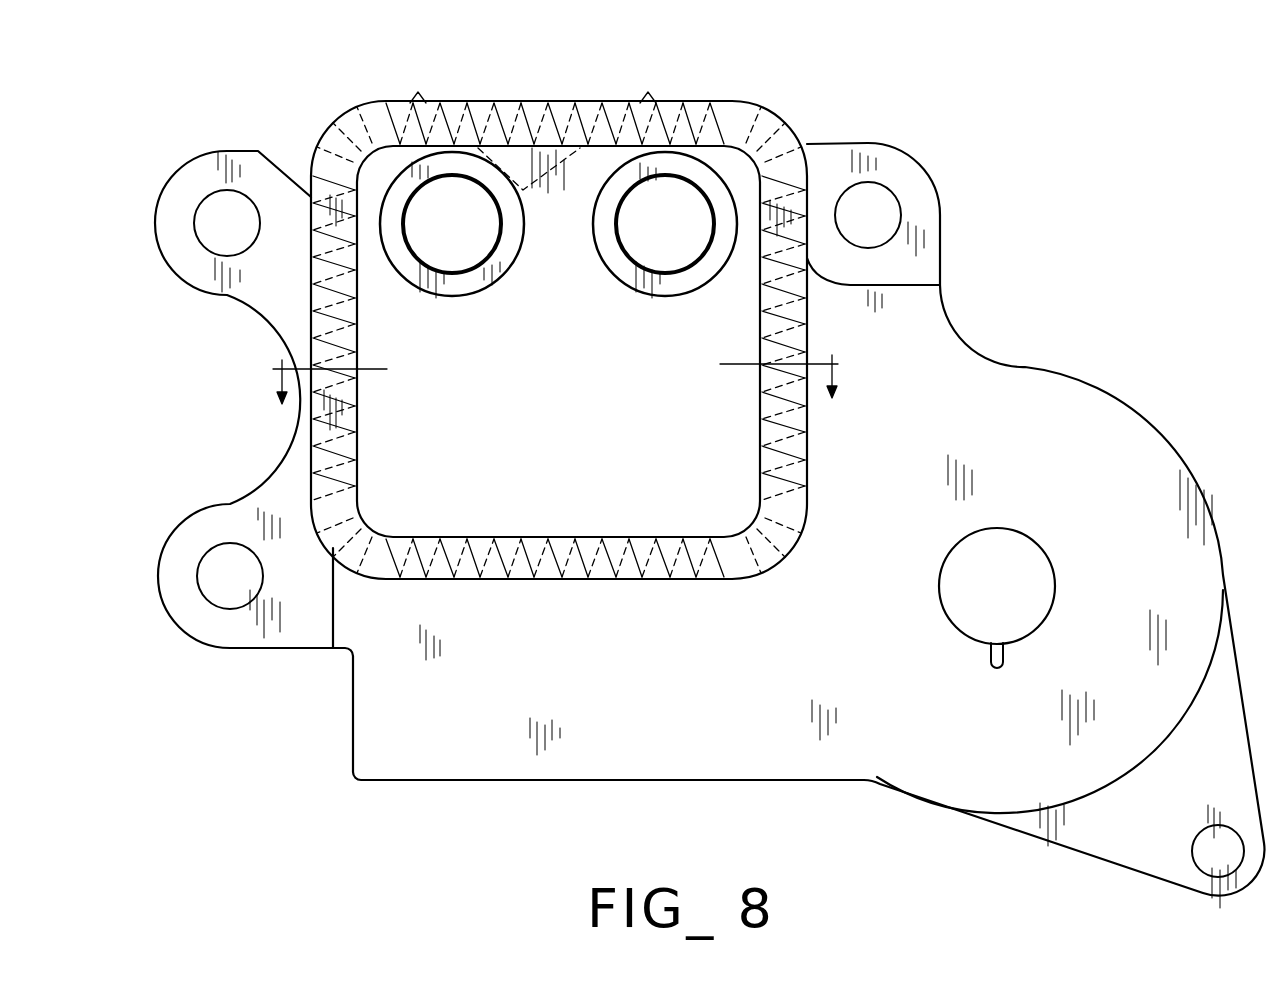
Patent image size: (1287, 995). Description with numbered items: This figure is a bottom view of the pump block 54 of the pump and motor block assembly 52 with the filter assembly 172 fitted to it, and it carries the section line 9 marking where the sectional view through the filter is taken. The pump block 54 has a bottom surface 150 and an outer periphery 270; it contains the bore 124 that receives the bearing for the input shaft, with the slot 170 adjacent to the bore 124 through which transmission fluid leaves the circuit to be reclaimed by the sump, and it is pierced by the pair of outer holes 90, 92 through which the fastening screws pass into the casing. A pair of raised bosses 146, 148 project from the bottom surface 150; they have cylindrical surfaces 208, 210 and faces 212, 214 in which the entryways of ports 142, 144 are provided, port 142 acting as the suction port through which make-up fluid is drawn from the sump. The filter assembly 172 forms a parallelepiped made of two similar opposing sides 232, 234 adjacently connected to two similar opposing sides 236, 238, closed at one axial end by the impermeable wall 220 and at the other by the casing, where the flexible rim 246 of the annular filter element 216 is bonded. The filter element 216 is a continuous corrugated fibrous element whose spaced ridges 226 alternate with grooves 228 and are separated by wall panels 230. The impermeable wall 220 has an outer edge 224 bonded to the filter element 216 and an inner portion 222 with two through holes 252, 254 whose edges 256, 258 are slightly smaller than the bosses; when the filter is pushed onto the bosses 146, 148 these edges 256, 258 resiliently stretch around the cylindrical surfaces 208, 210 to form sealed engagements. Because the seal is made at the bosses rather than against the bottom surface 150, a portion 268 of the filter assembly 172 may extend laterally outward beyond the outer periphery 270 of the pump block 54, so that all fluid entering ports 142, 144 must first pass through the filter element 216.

The pump and motor block assembly 52 is at (1074, 332).
The pump block 54 is at (1160, 463).
The outer hole 90 is at (202, 207).
The outer hole 92 is at (870, 190).
The bore 124 is at (1048, 589).
The port 142 is at (446, 268).
The port 144 is at (602, 300).
The raised boss 146 is at (387, 185).
The raised boss 148 is at (720, 177).
The bottom surface 150 is at (618, 658).
The slot 170 is at (1004, 656).
The filter assembly 172 is at (548, 345).
The cylindrical surface 208 is at (420, 297).
The cylindrical surface 210 is at (657, 297).
The face 212 is at (493, 274).
The face 214 is at (693, 278).
The annular filter element 216 is at (723, 570).
The impermeable wall 220 is at (806, 503).
The inner portion 222 is at (687, 351).
The outer edge 224 is at (810, 457).
The ridges 226 is at (447, 580).
The grooves 228 is at (500, 537).
The wall panels 230 is at (507, 553).
The side 232 is at (803, 337).
The side 234 is at (310, 312).
The side 236 is at (537, 580).
The side 238 is at (612, 101).
The flexible rim 246 is at (605, 562).
The through hole 252 is at (512, 243).
The through hole 254 is at (598, 236).
The edge 256 is at (387, 277).
The edge 258 is at (737, 260).
The portion 268 is at (518, 158).
The outer periphery 270 is at (552, 165).
The section line 9- 9 is at (556, 393).